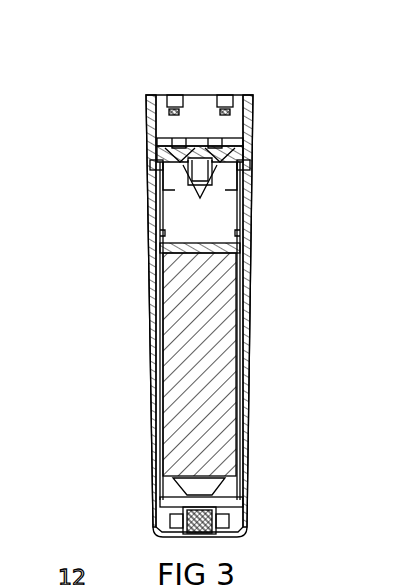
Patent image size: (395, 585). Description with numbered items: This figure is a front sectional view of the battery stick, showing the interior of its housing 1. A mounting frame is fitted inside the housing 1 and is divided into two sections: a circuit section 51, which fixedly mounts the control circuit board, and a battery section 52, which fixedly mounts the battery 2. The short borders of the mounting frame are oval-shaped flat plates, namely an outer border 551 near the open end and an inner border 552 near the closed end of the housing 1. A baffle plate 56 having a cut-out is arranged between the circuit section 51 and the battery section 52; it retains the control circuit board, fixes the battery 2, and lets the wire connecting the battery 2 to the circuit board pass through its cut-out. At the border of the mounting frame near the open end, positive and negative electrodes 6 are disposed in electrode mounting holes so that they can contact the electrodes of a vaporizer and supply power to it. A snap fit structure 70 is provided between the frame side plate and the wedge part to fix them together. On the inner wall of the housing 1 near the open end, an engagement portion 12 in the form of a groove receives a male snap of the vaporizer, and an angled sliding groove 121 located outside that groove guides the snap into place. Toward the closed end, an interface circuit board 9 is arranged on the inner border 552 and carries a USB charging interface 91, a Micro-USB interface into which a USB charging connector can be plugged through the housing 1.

The housing 1 is at (253, 120).
The battery 2 is at (148, 340).
The positive and negative electrodes 6 is at (173, 143).
The interface circuit board 9 is at (190, 517).
The engagement portion 12 is at (170, 97).
The circuit section 51 is at (158, 195).
The battery section 52 is at (243, 340).
The baffle plate 56 is at (200, 243).
The snap fit structure 70 is at (205, 177).
The sliding groove 121 is at (228, 97).
The outer border 551 is at (240, 150).
The inner border 552 is at (212, 497).
The USB charging interface 91 is at (185, 525).